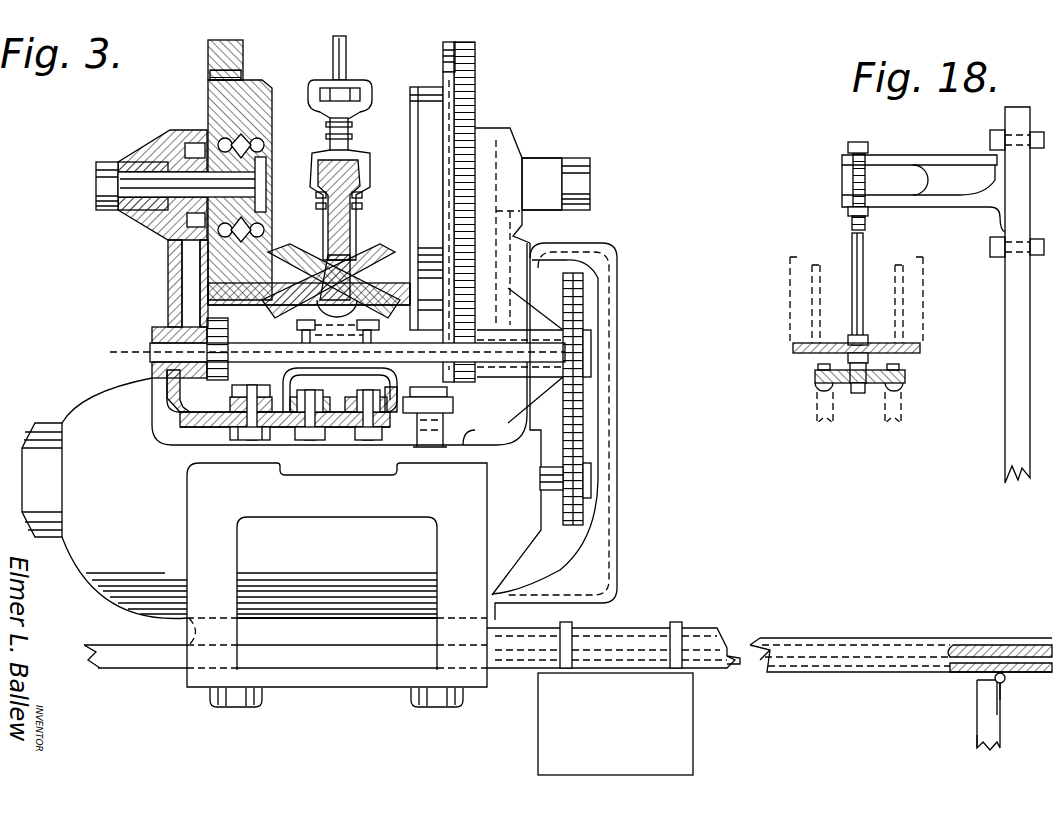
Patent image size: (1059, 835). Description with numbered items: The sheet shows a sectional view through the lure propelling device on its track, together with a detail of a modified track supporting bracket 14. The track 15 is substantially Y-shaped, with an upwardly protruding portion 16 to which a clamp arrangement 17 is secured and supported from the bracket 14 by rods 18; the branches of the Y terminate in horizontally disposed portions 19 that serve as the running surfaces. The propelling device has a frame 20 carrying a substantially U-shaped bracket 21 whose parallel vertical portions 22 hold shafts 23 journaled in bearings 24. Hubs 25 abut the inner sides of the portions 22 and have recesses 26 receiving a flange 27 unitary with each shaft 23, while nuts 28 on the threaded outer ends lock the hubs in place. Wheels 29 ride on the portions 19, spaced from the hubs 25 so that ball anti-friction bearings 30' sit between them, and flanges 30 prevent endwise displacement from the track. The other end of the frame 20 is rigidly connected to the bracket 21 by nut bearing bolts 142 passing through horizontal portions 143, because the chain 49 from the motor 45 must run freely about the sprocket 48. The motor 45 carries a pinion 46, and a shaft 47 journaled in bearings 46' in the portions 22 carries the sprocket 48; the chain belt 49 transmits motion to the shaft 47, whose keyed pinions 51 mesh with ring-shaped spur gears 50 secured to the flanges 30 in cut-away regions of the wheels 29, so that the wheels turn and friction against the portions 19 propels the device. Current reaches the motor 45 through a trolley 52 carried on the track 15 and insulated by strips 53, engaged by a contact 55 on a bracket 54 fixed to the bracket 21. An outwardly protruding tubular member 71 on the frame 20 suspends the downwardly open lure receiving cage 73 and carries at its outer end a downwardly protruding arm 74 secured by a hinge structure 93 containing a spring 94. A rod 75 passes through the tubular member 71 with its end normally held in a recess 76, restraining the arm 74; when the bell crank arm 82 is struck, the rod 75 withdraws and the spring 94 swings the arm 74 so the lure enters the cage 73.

In FIG. 18, the track supporting bracket 14 is at (935, 158).
In FIG. 3, the track 15 is at (350, 238).
In FIG. 3, the upwardly protruding portion 16 is at (358, 165).
In FIG. 3, the clamp arrangement 17 is at (372, 94).
In FIG. 3, the rod 18 is at (347, 62).
In FIG. 18, the rod 18 is at (864, 252).
In FIG. 3, the horizontally disposed portion 19 is at (268, 306).
In FIG. 3, the frame 20 is at (237, 570).
In FIG. 3, the U-shaped bracket 21 is at (212, 372).
In FIG. 3, the vertical portion 22 is at (172, 268).
In FIG. 3, the shaft 23 is at (133, 178).
In FIG. 3, the bearing 24 is at (146, 207).
In FIG. 3, the hub 25 is at (265, 150).
In FIG. 3, the recess 26 is at (266, 210).
In FIG. 3, the flange 27 is at (267, 188).
In FIG. 3, the nut 28 is at (100, 207).
In FIG. 3, the wheel 29 is at (268, 95).
In FIG. 3, the flange 30 is at (331, 55).
In FIG. 3, the anti-friction bearing 30' is at (264, 135).
In FIG. 3, the motor 45 is at (95, 586).
In FIG. 3, the pinion 46 is at (599, 484).
In FIG. 3, the bearing 46' is at (152, 389).
In FIG. 3, the shaft 47 is at (150, 355).
In FIG. 3, the sprocket 48 is at (583, 352).
In FIG. 3, the chain belt 49 is at (582, 438).
In FIG. 3, the ring-shaped spur gear 50 is at (208, 50).
In FIG. 3, the pinion 51 is at (230, 395).
In FIG. 3, the trolley 52 is at (364, 272).
In FIG. 18, the trolley 52 is at (815, 382).
In FIG. 3, the insulating strip 53 is at (300, 272).
In FIG. 3, the bracket 54 is at (283, 380).
In FIG. 3, the contact 55 is at (358, 315).
In FIG. 3, the tubular member 71 is at (705, 630).
In FIG. 3, the lure receiving cage 73 is at (694, 740).
In FIG. 3, the rod 74 is at (978, 740).
In FIG. 3, the rod 75 is at (735, 664).
In FIG. 3, the recess 76 is at (1052, 630).
In FIG. 3, the arm 82 is at (118, 668).
In FIG. 3, the hinge structure 93 is at (1001, 716).
In FIG. 3, the spring 94 is at (1006, 687).
In FIG. 3, the nut bearing bolt 142 is at (250, 440).
In FIG. 3, the horizontal portion 143 is at (247, 432).